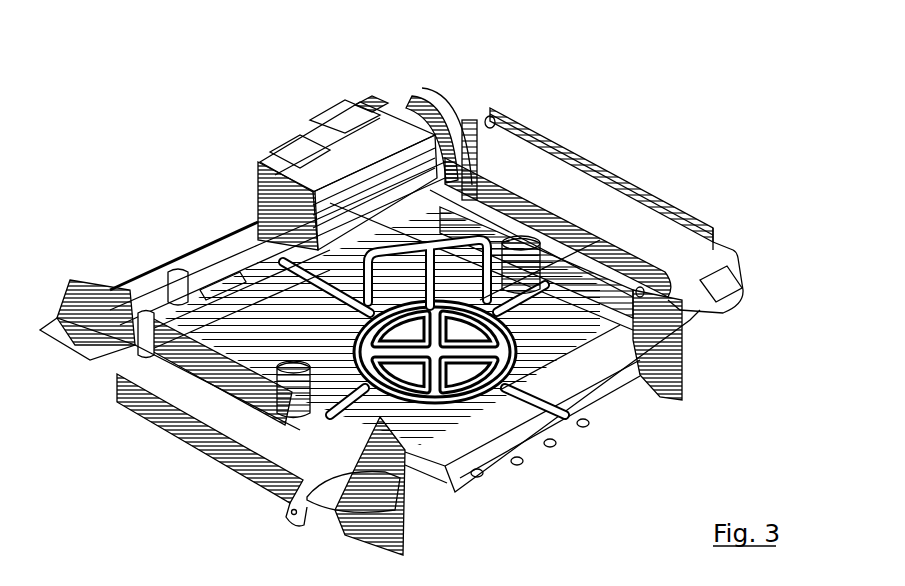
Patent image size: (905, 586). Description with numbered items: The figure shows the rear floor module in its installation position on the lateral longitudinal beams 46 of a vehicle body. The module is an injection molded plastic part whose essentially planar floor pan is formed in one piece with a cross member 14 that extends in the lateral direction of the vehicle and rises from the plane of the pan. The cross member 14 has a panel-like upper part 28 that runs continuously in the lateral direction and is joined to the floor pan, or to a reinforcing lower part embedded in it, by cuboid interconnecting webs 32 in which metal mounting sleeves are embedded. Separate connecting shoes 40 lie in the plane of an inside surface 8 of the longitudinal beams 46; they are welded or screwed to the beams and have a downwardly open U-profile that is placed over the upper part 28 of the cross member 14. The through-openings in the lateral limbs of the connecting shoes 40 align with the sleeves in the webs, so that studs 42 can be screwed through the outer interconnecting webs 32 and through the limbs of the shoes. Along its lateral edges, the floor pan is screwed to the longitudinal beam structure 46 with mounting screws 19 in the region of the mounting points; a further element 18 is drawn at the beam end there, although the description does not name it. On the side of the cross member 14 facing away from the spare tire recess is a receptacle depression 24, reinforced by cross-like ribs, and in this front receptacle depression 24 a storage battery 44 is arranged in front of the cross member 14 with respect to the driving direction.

The inside surface 8 is at (118, 300).
The cross member 14 is at (258, 240).
The side bracket 18 is at (605, 235).
The mounting screws 19 is at (492, 115).
The receptacle depression 24 is at (179, 278).
The upper part 28 is at (225, 245).
The interconnecting webs 32 is at (285, 305).
The connecting shoes 40 is at (450, 110).
The studs 42 is at (435, 205).
The storage battery 44 is at (383, 107).
The longitudinal beams 46 is at (560, 155).